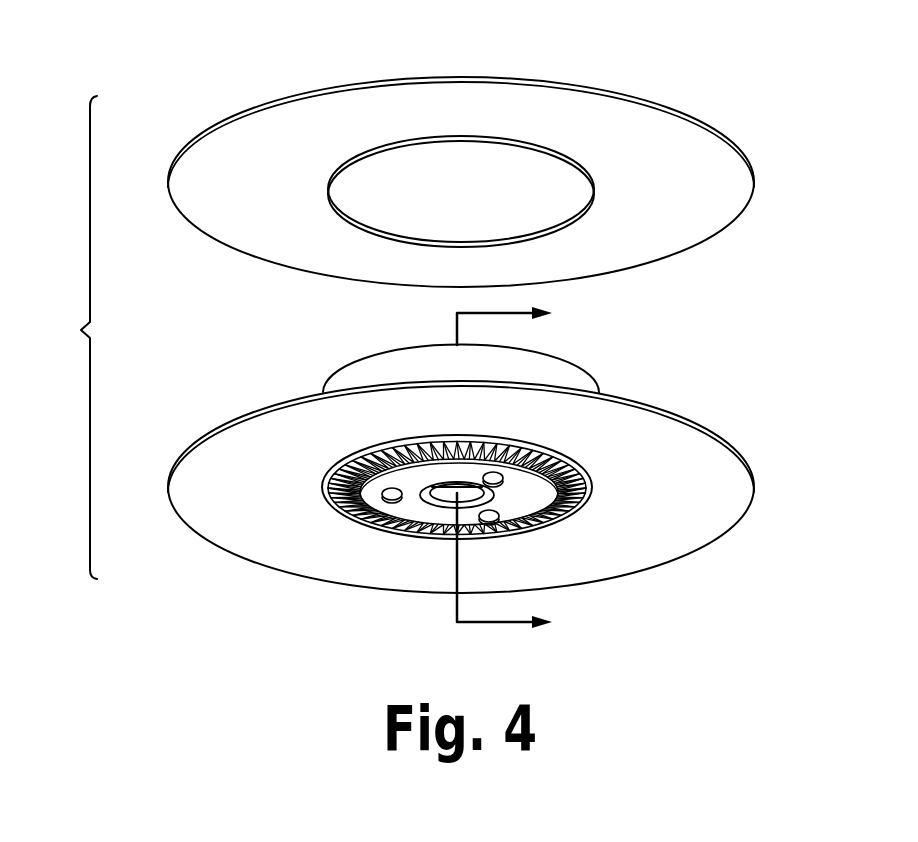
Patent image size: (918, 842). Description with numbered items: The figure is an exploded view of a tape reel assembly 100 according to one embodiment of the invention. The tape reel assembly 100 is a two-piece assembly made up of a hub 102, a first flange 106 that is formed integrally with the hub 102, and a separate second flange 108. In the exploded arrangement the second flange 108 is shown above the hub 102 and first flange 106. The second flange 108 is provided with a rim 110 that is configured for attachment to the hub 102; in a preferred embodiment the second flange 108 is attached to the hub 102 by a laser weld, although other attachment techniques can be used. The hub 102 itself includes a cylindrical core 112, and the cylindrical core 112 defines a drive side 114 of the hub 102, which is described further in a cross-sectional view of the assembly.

The tape reel assembly 100 is at (60, 337).
The hub 102 is at (650, 319).
The first flange 106 is at (501, 510).
The second flange 108 is at (504, 156).
The rim 110 is at (466, 142).
The cylindrical core 112 is at (540, 493).
The drive side 114 is at (355, 497).